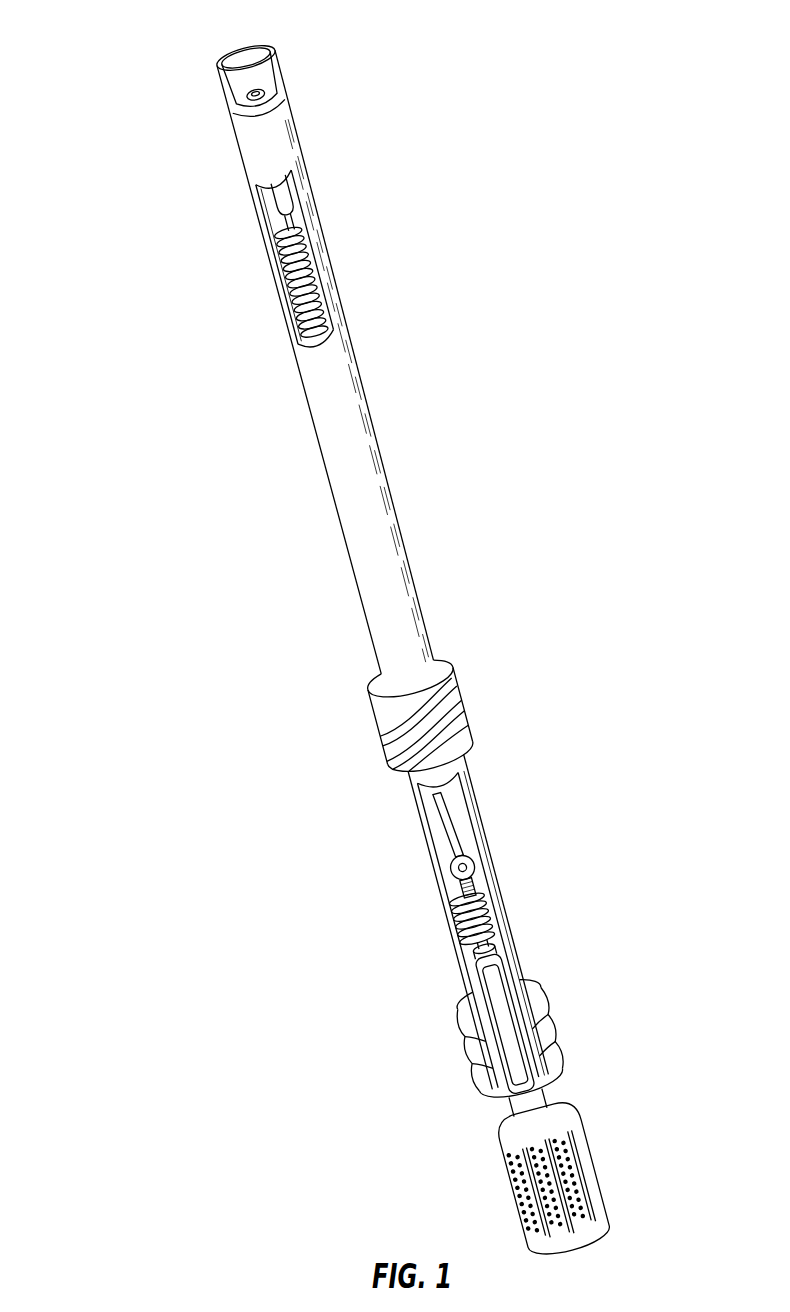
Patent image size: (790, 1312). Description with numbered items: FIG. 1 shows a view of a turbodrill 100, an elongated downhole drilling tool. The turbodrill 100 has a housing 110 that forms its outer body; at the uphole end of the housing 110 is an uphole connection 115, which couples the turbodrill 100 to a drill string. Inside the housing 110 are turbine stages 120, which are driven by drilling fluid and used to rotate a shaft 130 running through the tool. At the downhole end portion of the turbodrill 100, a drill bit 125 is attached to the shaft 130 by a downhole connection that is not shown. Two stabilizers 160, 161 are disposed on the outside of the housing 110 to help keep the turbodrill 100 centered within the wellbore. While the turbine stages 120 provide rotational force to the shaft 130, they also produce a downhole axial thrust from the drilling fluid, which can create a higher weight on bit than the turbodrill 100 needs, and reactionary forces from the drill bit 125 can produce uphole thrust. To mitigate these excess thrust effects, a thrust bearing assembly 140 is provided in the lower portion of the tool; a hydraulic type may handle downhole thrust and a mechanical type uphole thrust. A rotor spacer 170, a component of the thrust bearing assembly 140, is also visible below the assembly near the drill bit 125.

The turbodrill 100 is at (133, 44).
The housing 110 is at (381, 497).
The uphole connection 115 is at (280, 76).
The turbine stages 120 is at (335, 236).
The drill bit 125 is at (600, 1170).
The shaft 130 is at (458, 831).
The thrust bearing assembly 140 is at (511, 914).
The stabilizer 160 is at (462, 705).
The stabilizer 161 is at (458, 1027).
The rotor spacer 170 is at (500, 1061).